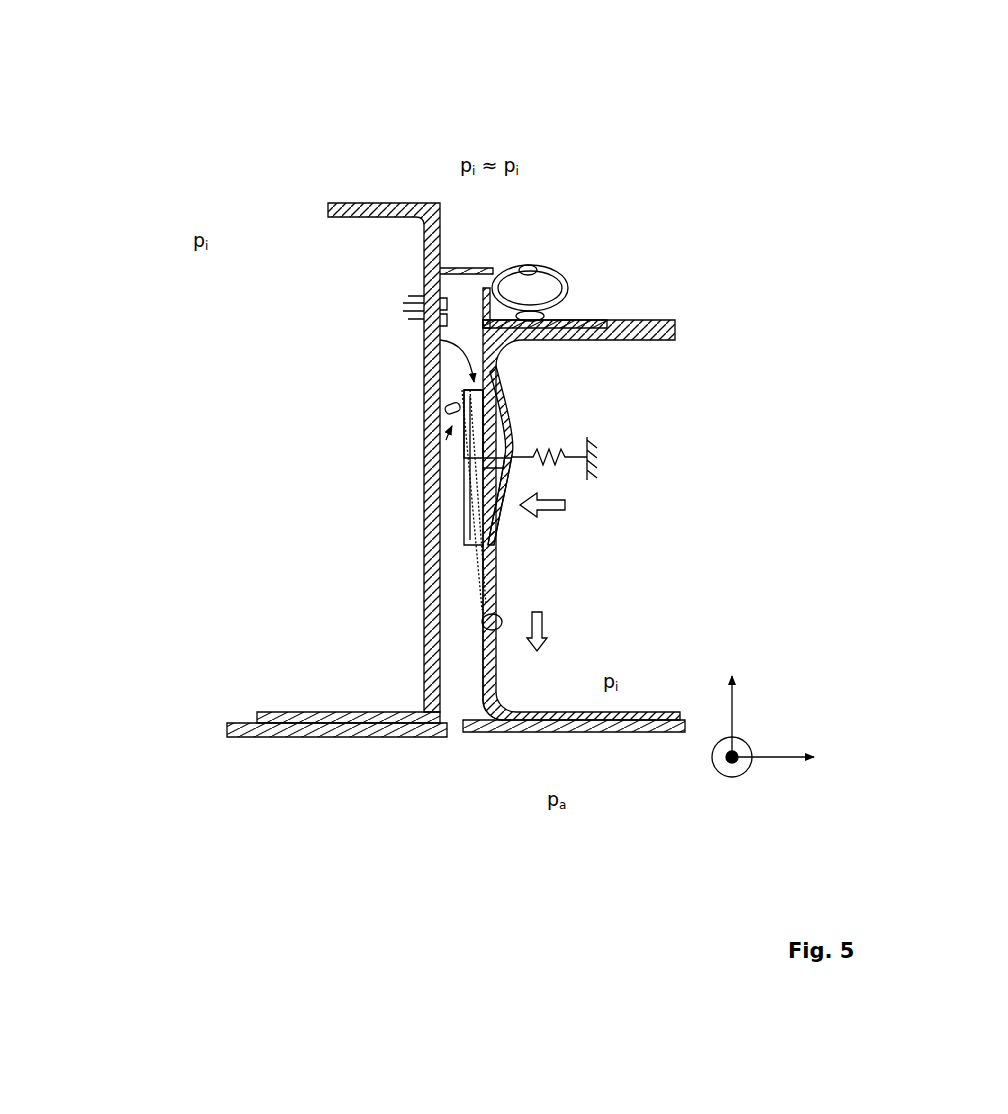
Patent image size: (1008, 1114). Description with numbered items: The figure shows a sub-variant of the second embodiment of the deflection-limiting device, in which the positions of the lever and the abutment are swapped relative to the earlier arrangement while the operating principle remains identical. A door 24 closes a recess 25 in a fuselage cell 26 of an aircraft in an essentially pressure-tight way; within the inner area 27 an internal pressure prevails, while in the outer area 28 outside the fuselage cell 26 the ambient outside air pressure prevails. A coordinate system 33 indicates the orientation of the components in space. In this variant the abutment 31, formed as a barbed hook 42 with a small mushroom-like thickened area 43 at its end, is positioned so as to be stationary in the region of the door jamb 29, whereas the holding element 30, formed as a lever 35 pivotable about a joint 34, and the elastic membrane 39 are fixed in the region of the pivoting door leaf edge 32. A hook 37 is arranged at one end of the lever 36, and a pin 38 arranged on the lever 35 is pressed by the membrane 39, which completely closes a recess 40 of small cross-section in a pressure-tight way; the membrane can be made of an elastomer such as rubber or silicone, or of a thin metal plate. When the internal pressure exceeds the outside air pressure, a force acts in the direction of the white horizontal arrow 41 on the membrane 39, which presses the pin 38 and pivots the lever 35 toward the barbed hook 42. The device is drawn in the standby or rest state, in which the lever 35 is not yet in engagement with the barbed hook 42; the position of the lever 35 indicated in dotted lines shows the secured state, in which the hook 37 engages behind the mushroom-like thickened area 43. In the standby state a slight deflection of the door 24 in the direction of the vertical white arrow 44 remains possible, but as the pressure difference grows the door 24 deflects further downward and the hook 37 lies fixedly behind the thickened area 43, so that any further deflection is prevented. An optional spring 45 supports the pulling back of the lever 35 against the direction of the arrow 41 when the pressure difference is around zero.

The door 24 is at (652, 328).
The recess 25 is at (625, 270).
The fuselage cell 26 is at (424, 81).
The inner area 27 is at (362, 270).
The outer area 28 is at (475, 808).
The door jamb 29 is at (427, 655).
The holding element 30 is at (466, 541).
The abutment 31 is at (425, 473).
The door leaf edge 32 is at (500, 658).
The coordinate system 33 is at (734, 757).
The joint 34 is at (500, 612).
The lever 35 is at (424, 490).
The lever 36 is at (497, 357).
The hook 37 is at (424, 332).
The pin 38 is at (505, 477).
The elastic membrane 39 is at (505, 535).
The recess 40 is at (508, 413).
The horizontal arrow 41 is at (565, 507).
The barbed hook 42 is at (424, 357).
The mushroom-like thickened area 43 is at (424, 422).
The vertical arrow 44 is at (545, 612).
The spring 45 is at (547, 449).